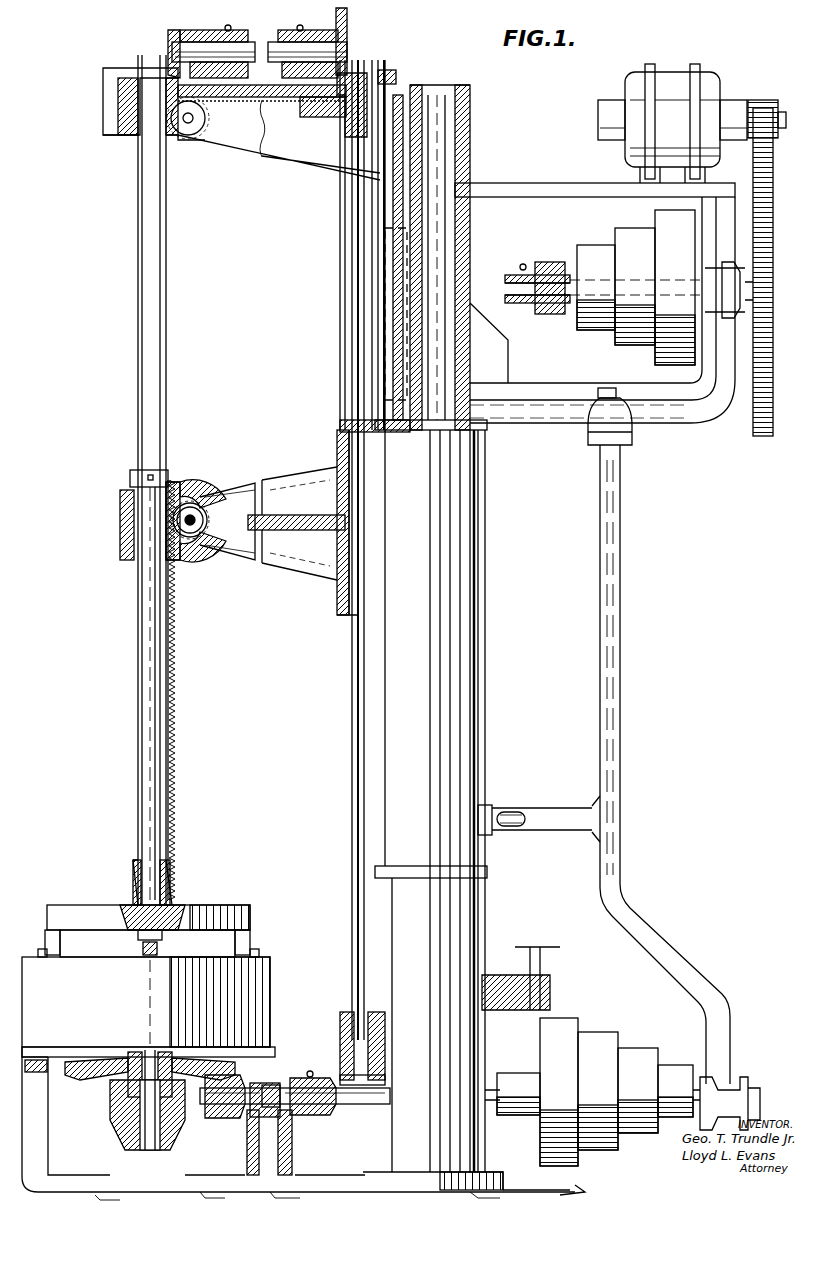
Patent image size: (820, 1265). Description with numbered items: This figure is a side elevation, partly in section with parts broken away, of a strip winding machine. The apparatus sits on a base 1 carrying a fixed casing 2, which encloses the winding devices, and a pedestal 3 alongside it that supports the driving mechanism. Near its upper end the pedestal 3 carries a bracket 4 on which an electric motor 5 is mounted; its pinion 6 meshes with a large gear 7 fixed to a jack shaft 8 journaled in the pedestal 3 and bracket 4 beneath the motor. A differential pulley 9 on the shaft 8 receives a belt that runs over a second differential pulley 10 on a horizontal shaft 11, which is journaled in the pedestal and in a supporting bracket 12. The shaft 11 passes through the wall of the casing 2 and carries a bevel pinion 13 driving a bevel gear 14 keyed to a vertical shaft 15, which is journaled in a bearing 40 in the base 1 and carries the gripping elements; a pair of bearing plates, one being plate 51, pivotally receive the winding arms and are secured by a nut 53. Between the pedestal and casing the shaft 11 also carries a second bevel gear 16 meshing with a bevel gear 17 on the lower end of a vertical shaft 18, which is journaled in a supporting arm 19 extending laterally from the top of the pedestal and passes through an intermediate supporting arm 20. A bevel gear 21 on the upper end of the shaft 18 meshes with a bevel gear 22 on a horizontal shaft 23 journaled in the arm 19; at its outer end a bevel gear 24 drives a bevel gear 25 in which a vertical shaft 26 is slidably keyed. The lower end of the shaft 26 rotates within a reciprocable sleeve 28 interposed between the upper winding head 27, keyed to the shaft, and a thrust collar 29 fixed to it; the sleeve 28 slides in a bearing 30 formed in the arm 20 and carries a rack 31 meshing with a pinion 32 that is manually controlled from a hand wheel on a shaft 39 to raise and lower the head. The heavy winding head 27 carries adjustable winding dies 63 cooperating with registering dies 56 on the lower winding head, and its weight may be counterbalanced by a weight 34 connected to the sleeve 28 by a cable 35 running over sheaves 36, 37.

The base 1 is at (272, 1052).
The fixed casing 2 is at (270, 992).
The pedestal 3 is at (478, 605).
The bracket 4 is at (700, 423).
The electric motor 5 is at (601, 130).
The pinion 6 is at (764, 102).
The large gear 7 is at (773, 207).
The jack shaft 8 is at (528, 272).
The differential pulley 9 is at (630, 238).
The second differential pulley 10 is at (621, 1056).
The horizontal shaft 11 is at (366, 1104).
The supporting bracket 12 is at (620, 742).
The bevel pinion 13 is at (222, 1118).
The bevel gear 14 is at (75, 1078).
The vertical shaft 15 is at (142, 1080).
The second bevel gear 16 is at (335, 1078).
The bevel gear 17 is at (380, 1068).
The vertical shaft 18 is at (352, 726).
The supporting arm 19 is at (278, 150).
The intermediate supporting arm 20 is at (280, 482).
The bevel gear 21 is at (365, 80).
The bevel gear 22 is at (347, 18).
The horizontal shaft 23 is at (255, 50).
The bevel gear 24 is at (176, 33).
The bevel gear 25 is at (110, 68).
The vertical shaft 26 is at (137, 166).
The upper winding head 27 is at (210, 918).
The reciprocable sleeve 28 is at (137, 596).
The thrust collar 29 is at (130, 476).
The bearing 30 is at (120, 520).
The rack 31 is at (176, 626).
The pinion 32 is at (192, 505).
The weight 34 is at (385, 322).
The cable 35 is at (287, 100).
The sheave 36 is at (184, 137).
The sheave 37 is at (408, 92).
The shaft 39 is at (200, 545).
The bearing 40 is at (110, 1135).
The bearing plate 51 is at (162, 935).
The nut 53 is at (157, 948).
The registering dies 56 is at (42, 952).
The adjustable winding dies 63 is at (47, 938).